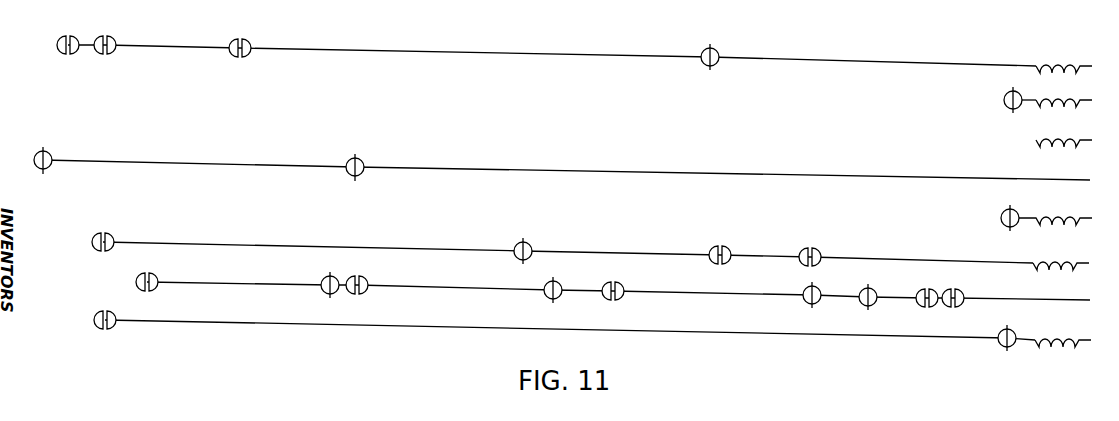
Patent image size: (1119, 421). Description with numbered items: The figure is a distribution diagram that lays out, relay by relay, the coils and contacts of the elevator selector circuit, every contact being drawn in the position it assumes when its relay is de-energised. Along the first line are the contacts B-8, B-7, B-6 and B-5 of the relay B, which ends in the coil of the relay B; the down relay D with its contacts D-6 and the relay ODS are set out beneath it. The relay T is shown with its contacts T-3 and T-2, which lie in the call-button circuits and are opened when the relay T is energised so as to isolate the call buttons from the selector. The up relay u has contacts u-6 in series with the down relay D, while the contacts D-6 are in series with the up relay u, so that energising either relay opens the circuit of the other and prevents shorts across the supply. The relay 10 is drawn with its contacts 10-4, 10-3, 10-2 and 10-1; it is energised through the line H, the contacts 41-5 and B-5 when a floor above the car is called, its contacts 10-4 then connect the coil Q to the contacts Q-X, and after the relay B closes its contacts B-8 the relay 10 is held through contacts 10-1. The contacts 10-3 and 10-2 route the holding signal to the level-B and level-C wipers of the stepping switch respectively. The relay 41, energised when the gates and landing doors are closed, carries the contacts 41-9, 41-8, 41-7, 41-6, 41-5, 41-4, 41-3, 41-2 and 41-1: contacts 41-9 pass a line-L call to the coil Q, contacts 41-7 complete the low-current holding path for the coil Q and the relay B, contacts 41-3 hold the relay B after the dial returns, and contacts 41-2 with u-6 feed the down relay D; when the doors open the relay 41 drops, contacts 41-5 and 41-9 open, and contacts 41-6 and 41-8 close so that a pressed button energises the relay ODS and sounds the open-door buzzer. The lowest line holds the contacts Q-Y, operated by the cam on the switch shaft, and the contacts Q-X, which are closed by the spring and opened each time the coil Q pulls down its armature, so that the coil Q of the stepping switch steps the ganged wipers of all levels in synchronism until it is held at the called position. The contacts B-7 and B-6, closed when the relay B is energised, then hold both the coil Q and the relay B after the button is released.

The contacts B-8 is at (68, 35).
The contacts B-7 is at (108, 35).
The contacts B-6 is at (240, 37).
The contacts B-5 is at (708, 49).
The relay B is at (1071, 56).
The contacts D-6 is at (1010, 94).
The down relay D is at (1071, 94).
The relay ODS is at (1077, 133).
The relay T is at (574, 173).
The contacts T-3 is at (41, 153).
The contacts T-2 is at (353, 160).
The contacts U-6 u-6 is at (1008, 212).
The up relay u is at (1062, 211).
The contacts 10-4 is at (102, 232).
The contacts 10-3 is at (525, 243).
The contacts 10-2 is at (718, 245).
The contacts 10-1 is at (807, 246).
The relay 10 is at (1072, 255).
The relay 41 is at (629, 294).
The contacts 41-9 is at (149, 274).
The contacts 41-8 is at (322, 278).
The contacts 41-7 is at (365, 276).
The contacts 41-6 is at (557, 284).
The contacts 41-5 is at (614, 283).
The relay 41 contact 4 41-4 is at (815, 290).
The contacts 41-3 is at (872, 291).
The contacts 41-2 is at (929, 289).
The relay 41 contact 1 41-1 is at (964, 289).
The contacts Q-Y is at (105, 310).
The contacts Q-X is at (1005, 330).
The stepping switch coil Q is at (1070, 332).